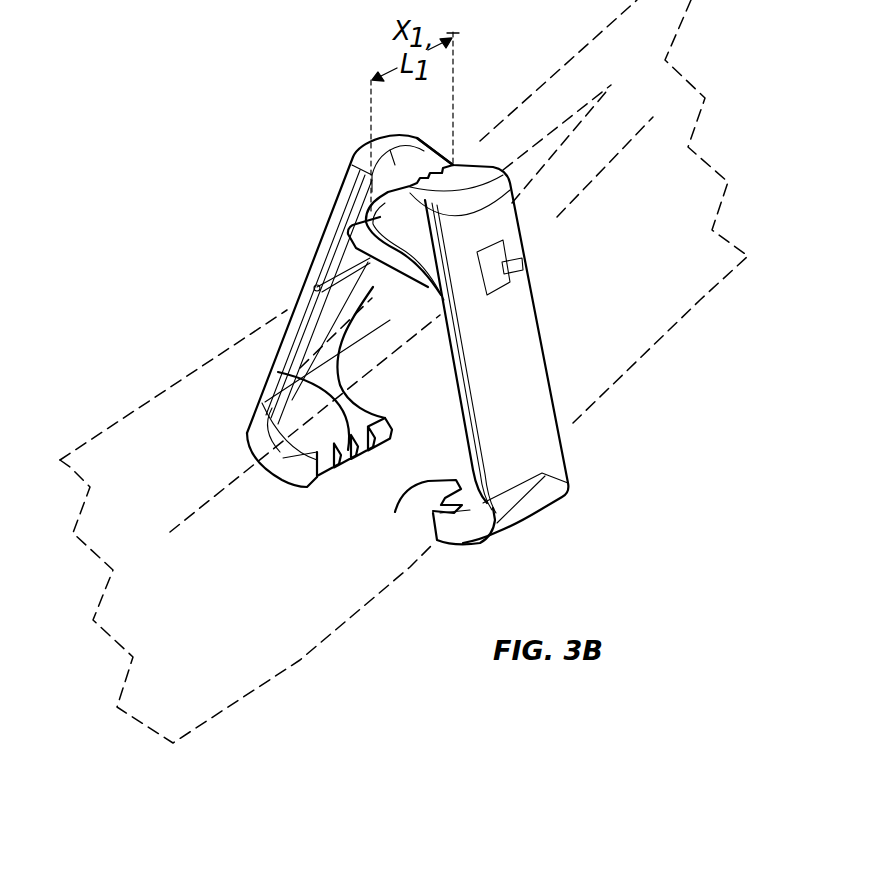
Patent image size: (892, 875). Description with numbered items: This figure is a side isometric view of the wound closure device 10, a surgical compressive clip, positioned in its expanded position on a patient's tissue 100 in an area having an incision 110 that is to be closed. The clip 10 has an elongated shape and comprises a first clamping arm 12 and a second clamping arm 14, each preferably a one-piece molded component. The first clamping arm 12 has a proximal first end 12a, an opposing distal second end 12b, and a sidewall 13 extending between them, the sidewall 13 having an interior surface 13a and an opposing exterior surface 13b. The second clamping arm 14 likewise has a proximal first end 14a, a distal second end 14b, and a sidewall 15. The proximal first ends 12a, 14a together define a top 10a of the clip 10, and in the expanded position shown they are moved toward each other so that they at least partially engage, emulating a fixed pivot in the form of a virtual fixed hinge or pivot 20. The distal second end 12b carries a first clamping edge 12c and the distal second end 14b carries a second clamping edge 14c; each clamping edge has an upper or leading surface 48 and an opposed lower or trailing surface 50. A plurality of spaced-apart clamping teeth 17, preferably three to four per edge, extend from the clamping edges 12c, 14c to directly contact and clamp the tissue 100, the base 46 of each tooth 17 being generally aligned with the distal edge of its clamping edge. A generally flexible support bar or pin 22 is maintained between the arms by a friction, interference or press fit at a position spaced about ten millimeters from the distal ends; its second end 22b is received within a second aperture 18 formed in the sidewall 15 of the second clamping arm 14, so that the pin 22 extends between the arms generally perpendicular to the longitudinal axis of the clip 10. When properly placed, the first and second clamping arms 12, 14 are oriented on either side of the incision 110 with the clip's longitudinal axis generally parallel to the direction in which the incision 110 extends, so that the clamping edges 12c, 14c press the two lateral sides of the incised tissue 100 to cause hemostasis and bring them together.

The wound closure device 10 is at (353, 155).
The top of the clip 10a is at (389, 162).
The first clamping arm 12 is at (308, 260).
The proximal first end 12a is at (388, 163).
The distal second end 12b is at (255, 450).
The first clamping edge 12c is at (265, 440).
The sidewall 13 is at (302, 285).
The interior surface 13a is at (323, 343).
The exterior surface 13b is at (283, 323).
The second clamping arm 14 is at (543, 410).
The proximal first end 14a is at (460, 173).
The distal second end 14b is at (457, 535).
The second clamping edge 14c is at (490, 506).
The sidewall 15 is at (542, 448).
The clamping teeth 17 is at (330, 405).
The second aperture 18 is at (508, 268).
The virtual fixed hinge or pivot 20 is at (413, 128).
The support bar or pin 22 is at (372, 242).
The second end of the pin 22b is at (503, 263).
The base 46 is at (275, 472).
The upper surface 48 is at (275, 420).
The lower surface 50 is at (260, 460).
The tissue 100 is at (128, 442).
The incision 110 is at (533, 163).